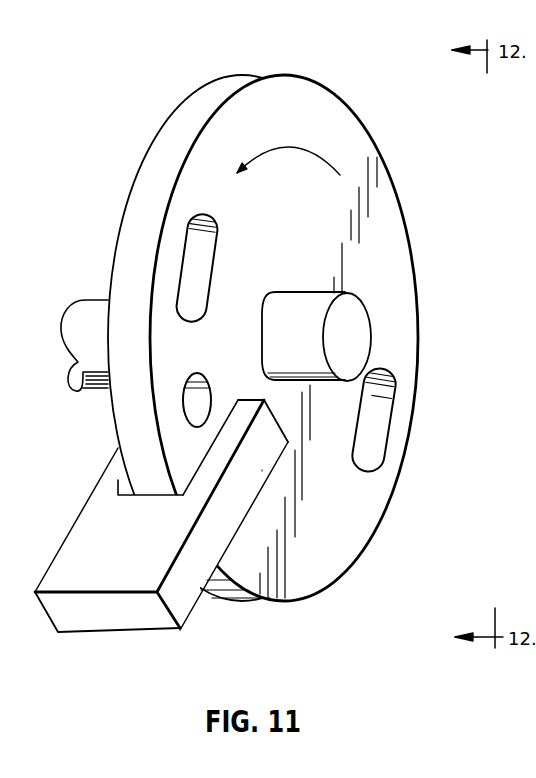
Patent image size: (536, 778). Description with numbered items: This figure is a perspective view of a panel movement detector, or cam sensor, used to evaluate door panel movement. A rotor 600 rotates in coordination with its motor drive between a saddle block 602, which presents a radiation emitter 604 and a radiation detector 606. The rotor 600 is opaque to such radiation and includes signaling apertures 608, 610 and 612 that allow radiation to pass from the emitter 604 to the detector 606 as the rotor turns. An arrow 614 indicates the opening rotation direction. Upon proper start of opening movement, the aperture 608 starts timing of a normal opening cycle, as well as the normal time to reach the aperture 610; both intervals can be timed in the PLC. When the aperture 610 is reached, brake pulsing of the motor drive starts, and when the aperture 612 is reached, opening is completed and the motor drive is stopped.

The rotor 600 is at (386, 216).
The saddle block 602 is at (158, 622).
The radiation emitter 604 is at (115, 470).
The radiation detector 606 is at (262, 470).
The signaling aperture 608 is at (373, 432).
The signaling aperture 610 is at (197, 403).
The signaling aperture 612 is at (200, 267).
The arrow 614 is at (290, 150).